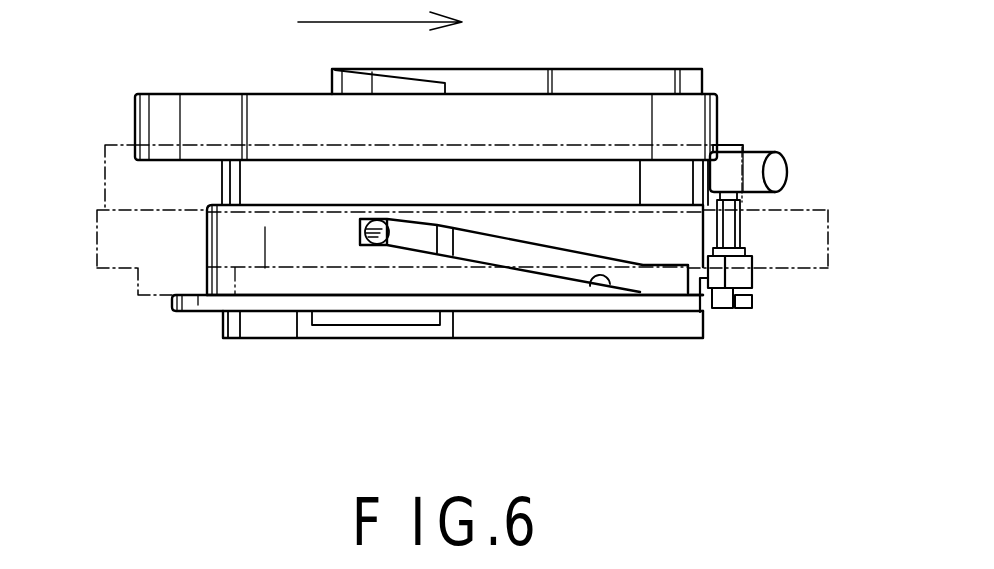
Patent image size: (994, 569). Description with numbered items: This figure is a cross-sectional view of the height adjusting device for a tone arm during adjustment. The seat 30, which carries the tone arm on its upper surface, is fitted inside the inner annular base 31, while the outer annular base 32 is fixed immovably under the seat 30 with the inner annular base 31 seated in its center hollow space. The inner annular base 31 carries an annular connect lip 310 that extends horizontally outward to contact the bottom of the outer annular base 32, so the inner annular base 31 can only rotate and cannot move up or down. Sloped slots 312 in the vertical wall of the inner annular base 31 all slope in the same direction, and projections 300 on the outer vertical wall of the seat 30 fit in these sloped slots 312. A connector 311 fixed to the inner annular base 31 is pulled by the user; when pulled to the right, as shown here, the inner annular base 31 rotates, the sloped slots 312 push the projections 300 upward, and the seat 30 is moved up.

The seat 30 is at (188, 108).
The outer annular base 32 is at (112, 235).
The inner annular base 31 is at (217, 247).
The annular connect lip 310 is at (212, 303).
The projection 300 is at (372, 243).
The sloped slot 312 is at (612, 285).
The connector 311 is at (777, 170).